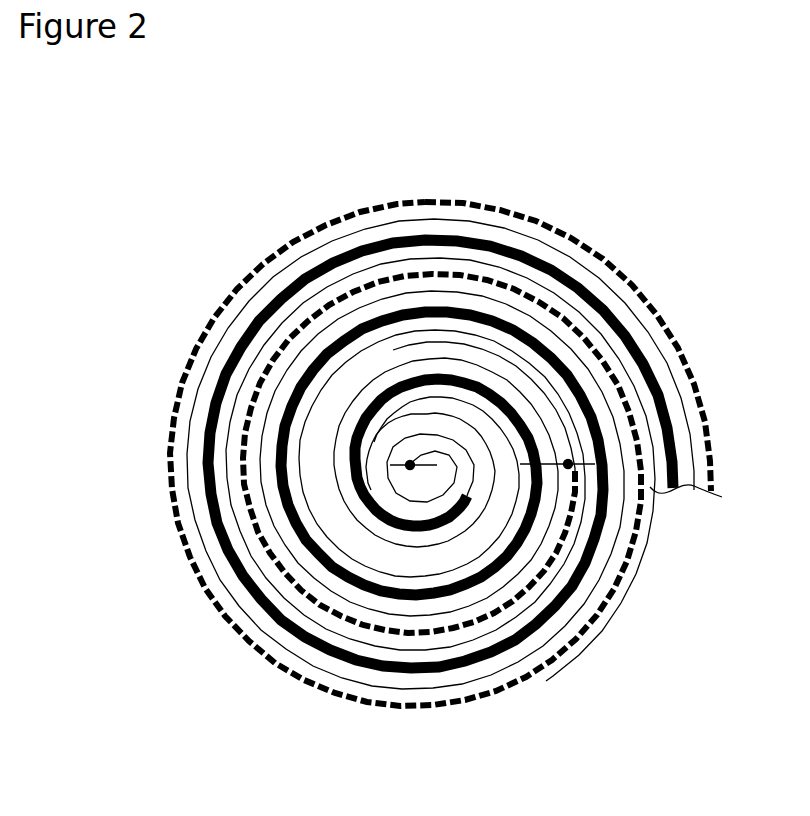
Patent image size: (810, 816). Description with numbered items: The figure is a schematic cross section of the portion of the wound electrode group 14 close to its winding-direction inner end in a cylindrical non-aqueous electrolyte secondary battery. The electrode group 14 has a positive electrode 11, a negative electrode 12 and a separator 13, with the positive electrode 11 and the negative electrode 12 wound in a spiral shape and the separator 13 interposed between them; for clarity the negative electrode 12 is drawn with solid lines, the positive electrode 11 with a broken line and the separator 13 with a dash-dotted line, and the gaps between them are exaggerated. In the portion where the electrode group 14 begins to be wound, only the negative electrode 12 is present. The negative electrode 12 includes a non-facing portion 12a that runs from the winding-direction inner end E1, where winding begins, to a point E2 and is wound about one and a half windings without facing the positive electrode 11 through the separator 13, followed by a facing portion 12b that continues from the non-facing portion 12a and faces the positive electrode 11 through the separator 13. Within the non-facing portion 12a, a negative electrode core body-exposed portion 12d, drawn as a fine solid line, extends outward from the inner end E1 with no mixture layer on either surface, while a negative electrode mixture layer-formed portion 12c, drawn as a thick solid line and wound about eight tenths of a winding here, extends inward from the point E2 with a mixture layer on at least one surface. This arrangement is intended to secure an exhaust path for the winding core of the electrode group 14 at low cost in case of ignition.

The positive electrode 11 is at (445, 710).
The negative electrode 12 is at (483, 660).
The non-facing portion 12a is at (493, 147).
The facing portion 12b is at (282, 570).
The negative electrode mixture layer-formed portion 12c is at (481, 373).
The negative electrode core body-exposed portion 12d is at (437, 435).
The separator 13 is at (535, 600).
The electrode group 14 is at (586, 250).
The winding-direction inner end E1 is at (410, 472).
The winding-direction outer end of the non-facing portion E2 is at (575, 492).